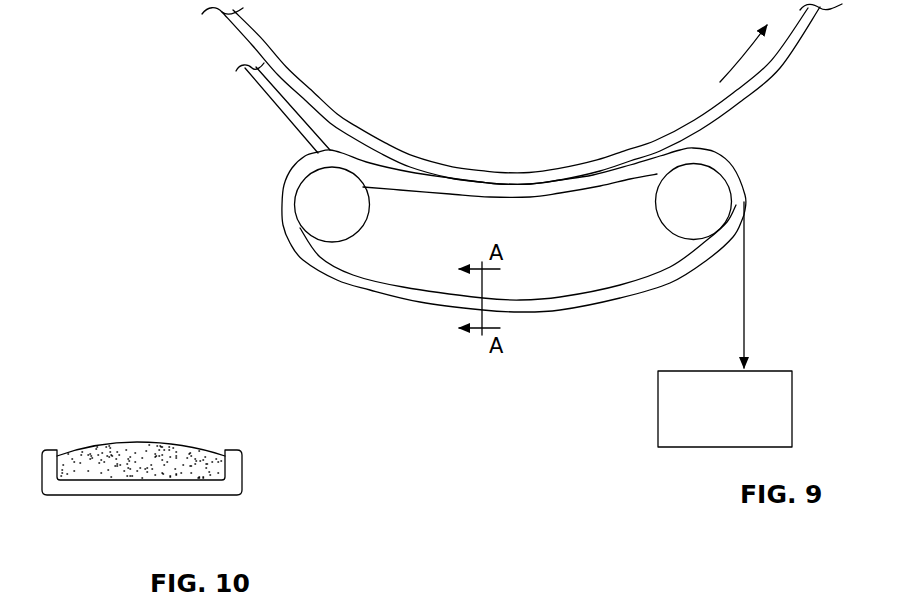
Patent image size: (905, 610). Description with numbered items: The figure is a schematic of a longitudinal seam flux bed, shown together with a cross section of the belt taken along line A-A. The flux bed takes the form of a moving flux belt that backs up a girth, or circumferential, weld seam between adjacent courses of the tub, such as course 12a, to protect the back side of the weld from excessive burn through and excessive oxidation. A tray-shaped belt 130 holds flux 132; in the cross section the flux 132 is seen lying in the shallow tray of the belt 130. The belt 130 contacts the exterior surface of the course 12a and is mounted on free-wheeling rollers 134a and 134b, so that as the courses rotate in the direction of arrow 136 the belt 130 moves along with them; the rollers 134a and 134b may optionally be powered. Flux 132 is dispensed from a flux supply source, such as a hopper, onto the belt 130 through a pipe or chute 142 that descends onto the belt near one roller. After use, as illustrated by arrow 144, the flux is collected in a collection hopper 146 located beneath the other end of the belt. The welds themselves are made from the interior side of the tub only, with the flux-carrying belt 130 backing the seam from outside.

In FIG. 9, the course 12a is at (804, 30).
In FIG. 9, the tray-shaped belt 130 is at (508, 307).
In FIG. 10, the tray-shaped belt 130 is at (132, 495).
In FIG. 9, the flux 132 is at (558, 182).
In FIG. 10, the flux 132 is at (137, 450).
In FIG. 9, the roller 134a is at (313, 218).
In FIG. 9, the roller 134b is at (713, 190).
In FIG. 9, the arrow 136 is at (743, 62).
In FIG. 9, the pipe or chute 142 is at (273, 98).
In FIG. 9, the arrow 144 is at (744, 290).
In FIG. 9, the collection hopper 146 is at (792, 400).